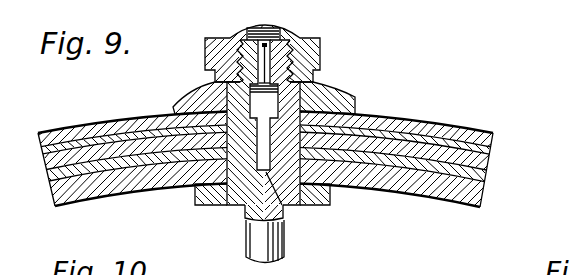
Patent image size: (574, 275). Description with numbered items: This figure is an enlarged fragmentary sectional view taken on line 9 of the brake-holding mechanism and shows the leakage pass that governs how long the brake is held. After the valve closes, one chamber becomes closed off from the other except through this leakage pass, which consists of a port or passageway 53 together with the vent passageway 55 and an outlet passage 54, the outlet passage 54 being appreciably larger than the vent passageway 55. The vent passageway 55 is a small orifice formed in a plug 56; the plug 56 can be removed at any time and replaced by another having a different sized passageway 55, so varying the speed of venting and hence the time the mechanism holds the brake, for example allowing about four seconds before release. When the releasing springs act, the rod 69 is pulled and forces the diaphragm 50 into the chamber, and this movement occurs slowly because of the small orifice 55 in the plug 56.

The diaphragm 50 is at (484, 168).
The port or passageway 53 is at (262, 108).
The section line 9— 9 is at (210, 193).
The plug 56 is at (278, 60).
The vent passageway 55 is at (269, 44).
The outlet passage 54 is at (304, 205).
The rod 69 is at (257, 243).